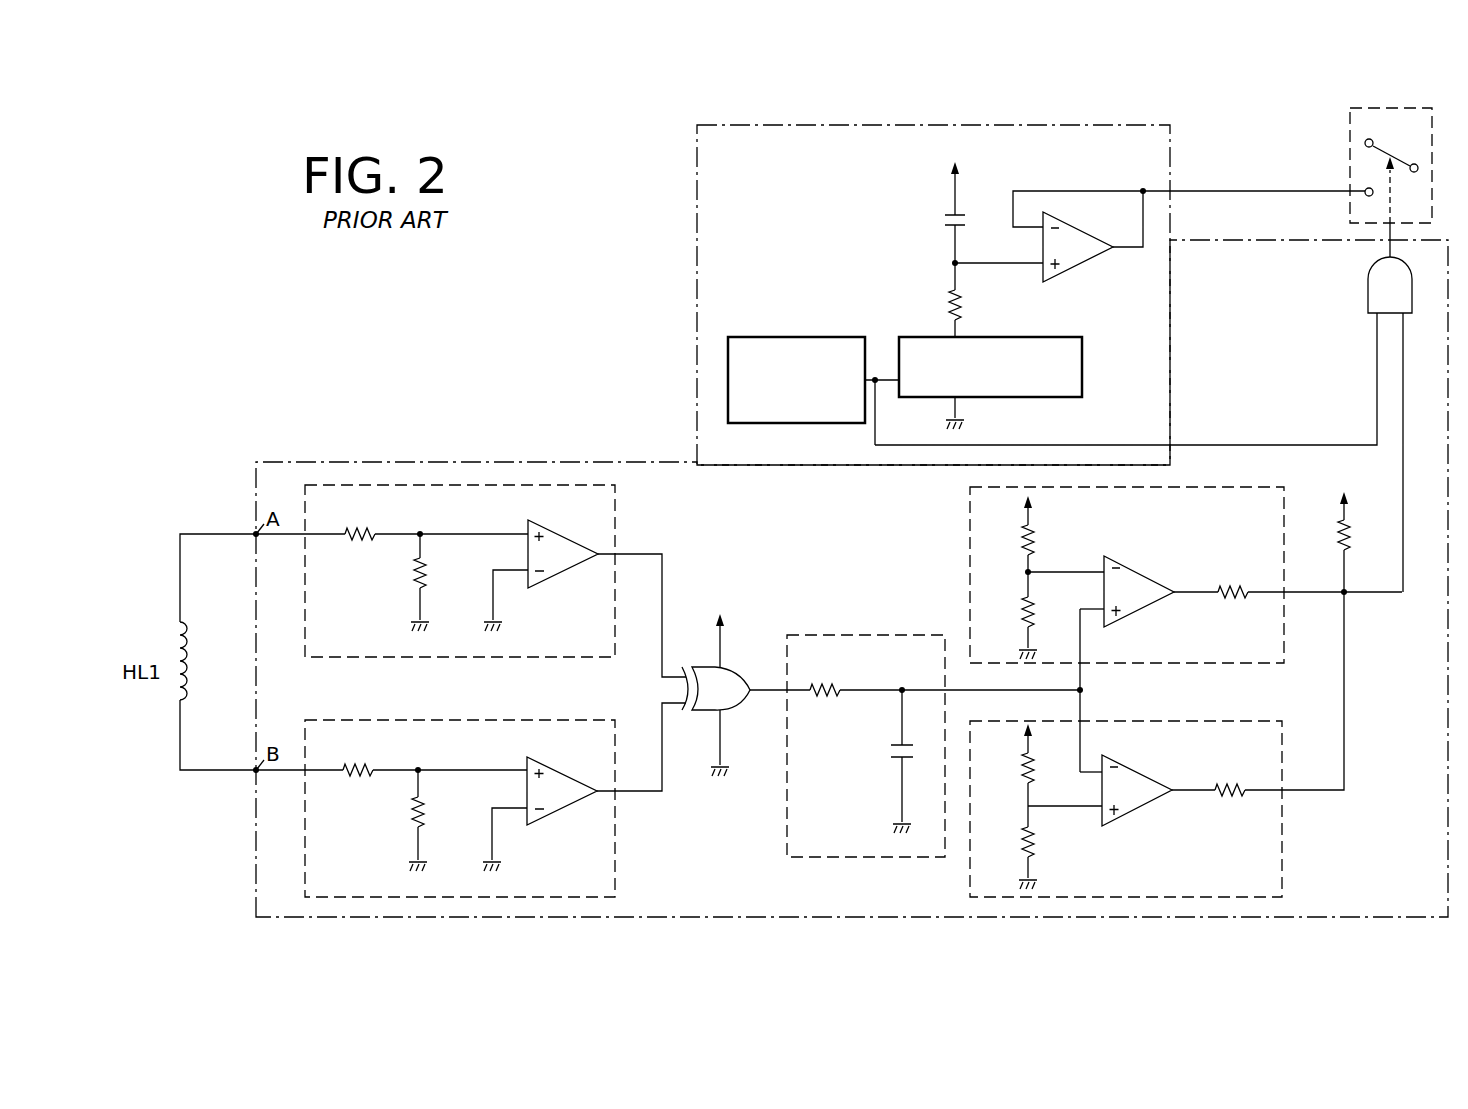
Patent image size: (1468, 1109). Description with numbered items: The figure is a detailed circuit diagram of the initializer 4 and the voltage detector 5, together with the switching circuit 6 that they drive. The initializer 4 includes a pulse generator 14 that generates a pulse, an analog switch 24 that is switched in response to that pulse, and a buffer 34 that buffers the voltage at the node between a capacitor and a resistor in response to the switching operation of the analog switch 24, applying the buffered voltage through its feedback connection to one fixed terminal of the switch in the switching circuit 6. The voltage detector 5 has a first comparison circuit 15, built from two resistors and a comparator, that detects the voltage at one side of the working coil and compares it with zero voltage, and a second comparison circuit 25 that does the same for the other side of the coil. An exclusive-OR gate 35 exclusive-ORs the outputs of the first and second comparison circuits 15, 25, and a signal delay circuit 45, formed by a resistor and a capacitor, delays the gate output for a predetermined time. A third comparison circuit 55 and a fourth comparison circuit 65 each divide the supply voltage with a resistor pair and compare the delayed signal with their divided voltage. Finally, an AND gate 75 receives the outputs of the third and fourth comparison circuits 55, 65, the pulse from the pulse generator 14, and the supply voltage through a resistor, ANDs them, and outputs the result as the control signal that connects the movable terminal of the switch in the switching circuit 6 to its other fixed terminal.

The initializer 4 is at (875, 125).
The voltage detector 5 is at (292, 462).
The switching circuit 6 is at (1368, 108).
The pulse generator 14 is at (778, 336).
The first comparison circuit 15 is at (618, 516).
The analog switch 24 is at (1075, 337).
The second comparison circuit 25 is at (530, 720).
The buffer 34 is at (1084, 230).
The exclusive-OR gate 35 is at (733, 668).
The signal delay circuit 45 is at (830, 635).
The third comparison circuit 55 is at (971, 497).
The fourth comparison circuit 65 is at (1283, 835).
The AND gate 75 is at (1412, 297).